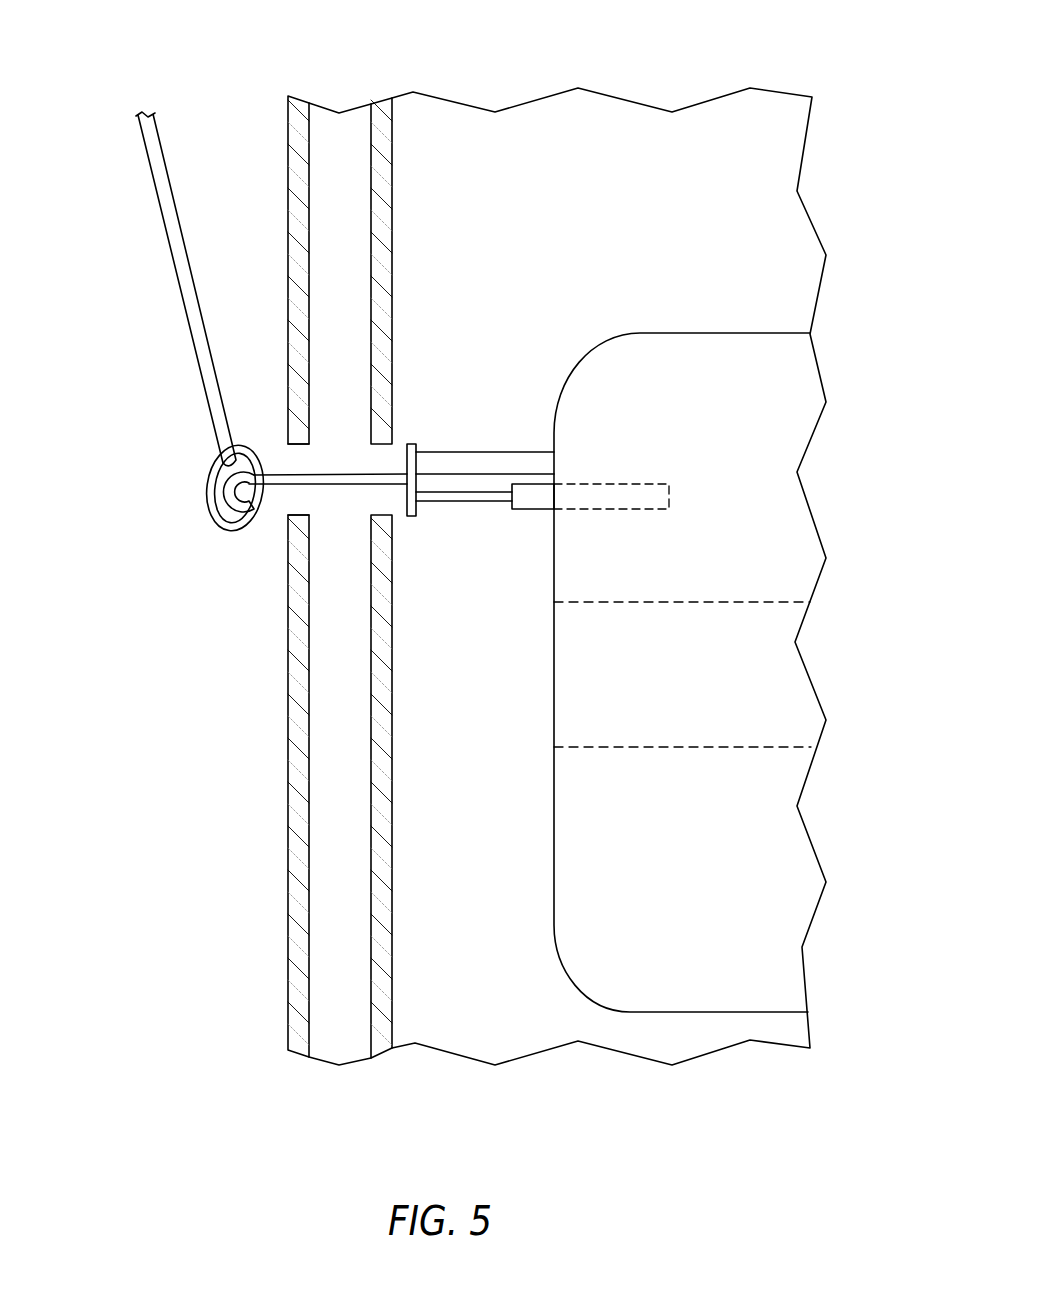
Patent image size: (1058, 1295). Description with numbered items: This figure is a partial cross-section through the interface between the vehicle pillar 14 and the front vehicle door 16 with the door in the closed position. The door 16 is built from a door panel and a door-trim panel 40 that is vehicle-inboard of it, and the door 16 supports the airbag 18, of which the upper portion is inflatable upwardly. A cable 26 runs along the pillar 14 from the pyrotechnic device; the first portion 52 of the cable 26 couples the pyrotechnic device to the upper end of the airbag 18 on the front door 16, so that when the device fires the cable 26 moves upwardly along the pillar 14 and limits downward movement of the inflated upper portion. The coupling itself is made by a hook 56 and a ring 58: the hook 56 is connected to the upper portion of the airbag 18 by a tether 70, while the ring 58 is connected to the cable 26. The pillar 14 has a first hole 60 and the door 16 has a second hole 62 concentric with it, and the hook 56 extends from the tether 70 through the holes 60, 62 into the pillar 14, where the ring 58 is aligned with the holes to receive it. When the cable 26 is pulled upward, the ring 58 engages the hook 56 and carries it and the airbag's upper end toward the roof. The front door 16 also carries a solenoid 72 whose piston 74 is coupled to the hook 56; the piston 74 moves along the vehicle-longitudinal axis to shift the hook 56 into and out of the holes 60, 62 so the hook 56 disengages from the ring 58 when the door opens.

The vehicle pillar 14 is at (288, 750).
The vehicle door 16 is at (651, 74).
The airbag 18 is at (686, 355).
The cable 26 is at (139, 289).
The first portion 52 is at (165, 228).
The door-trim panel 40 is at (393, 222).
The hook 56 is at (208, 470).
The ring 58 is at (232, 530).
The first hole 60 is at (300, 447).
The second hole 62 is at (392, 452).
The tether 70 is at (498, 452).
The solenoid 72 is at (637, 468).
The piston 74 is at (468, 503).